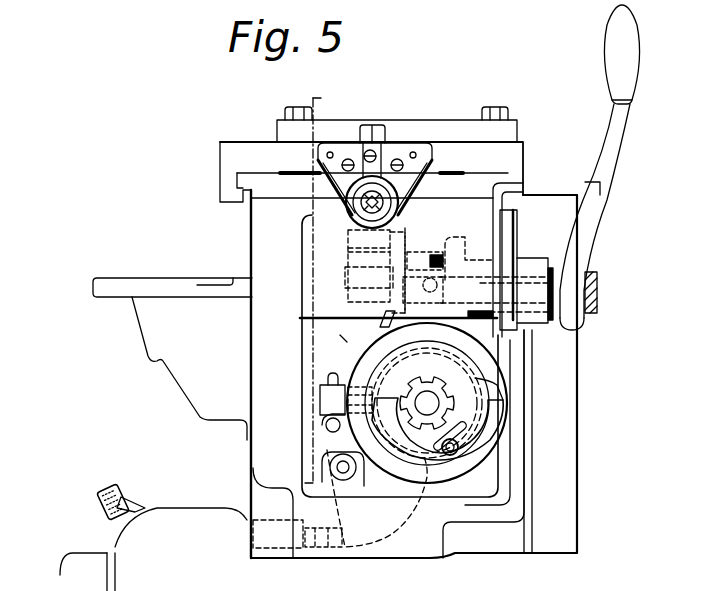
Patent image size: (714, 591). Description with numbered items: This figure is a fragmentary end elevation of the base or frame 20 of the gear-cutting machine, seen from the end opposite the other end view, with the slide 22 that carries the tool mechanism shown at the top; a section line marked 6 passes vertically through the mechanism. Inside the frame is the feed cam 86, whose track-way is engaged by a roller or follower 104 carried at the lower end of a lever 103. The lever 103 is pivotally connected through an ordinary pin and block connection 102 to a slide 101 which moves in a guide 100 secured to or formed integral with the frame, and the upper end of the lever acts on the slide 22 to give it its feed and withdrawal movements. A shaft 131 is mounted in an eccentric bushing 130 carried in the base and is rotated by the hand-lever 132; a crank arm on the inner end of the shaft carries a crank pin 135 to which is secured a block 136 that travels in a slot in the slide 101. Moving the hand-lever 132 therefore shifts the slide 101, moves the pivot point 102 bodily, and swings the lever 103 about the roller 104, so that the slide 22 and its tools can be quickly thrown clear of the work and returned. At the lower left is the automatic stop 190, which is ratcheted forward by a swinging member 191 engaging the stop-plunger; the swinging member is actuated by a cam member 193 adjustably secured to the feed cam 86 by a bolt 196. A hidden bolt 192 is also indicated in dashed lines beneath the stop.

The section line 6- 6 is at (313, 290).
The base or frame 20 is at (567, 440).
The slide 22 is at (520, 152).
The cam 86 is at (427, 403).
The guide 100 is at (375, 232).
The slide 101 is at (397, 230).
The pin and block connection 102 is at (358, 281).
The lever 103 is at (333, 331).
The roller or follower 104 is at (385, 372).
The bushing 130 is at (543, 332).
The shaft 131 is at (467, 290).
The hand-lever 132 is at (625, 132).
The crank pin 135 is at (418, 252).
The block 136 is at (423, 267).
The automatic stop 190 is at (197, 510).
The swinging member 191 is at (397, 527).
The bolt 192 is at (323, 548).
The cam member 193 is at (496, 408).
The bolt 196 is at (457, 442).